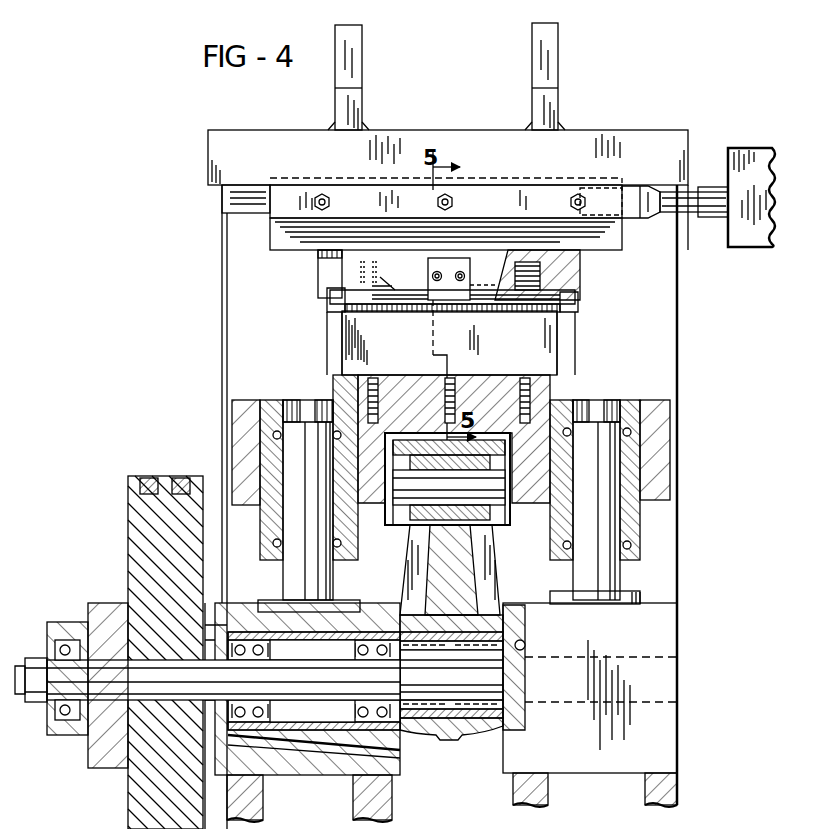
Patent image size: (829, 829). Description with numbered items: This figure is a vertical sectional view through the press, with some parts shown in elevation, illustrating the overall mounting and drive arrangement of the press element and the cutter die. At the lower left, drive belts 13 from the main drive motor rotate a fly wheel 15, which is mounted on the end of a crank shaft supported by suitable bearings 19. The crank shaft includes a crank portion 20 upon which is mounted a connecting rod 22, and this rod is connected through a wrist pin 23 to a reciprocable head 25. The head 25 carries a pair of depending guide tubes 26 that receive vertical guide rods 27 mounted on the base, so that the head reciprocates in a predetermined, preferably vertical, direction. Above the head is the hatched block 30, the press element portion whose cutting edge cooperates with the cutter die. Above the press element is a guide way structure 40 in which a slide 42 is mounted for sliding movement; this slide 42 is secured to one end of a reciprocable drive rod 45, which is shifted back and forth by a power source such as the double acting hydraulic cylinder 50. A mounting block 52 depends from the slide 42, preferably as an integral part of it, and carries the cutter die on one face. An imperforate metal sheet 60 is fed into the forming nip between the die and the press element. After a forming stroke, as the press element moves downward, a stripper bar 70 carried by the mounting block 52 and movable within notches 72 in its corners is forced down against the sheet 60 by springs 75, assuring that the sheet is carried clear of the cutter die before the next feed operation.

The drive belts 13 is at (182, 478).
The fly wheel 15 is at (130, 522).
The bearings 19 is at (350, 722).
The crank portion 20 is at (490, 660).
The connecting rod 22 is at (455, 577).
The wrist pin 23 is at (415, 487).
The reciprocable head 25 is at (352, 422).
The guide tubes 26 is at (262, 460).
The guide rods 27 is at (302, 428).
The slide block 30 is at (553, 388).
The guide way structure 40 is at (612, 245).
The slide 42 is at (350, 262).
The reciprocable drive rod 45 is at (690, 205).
The double acting hydraulic cylinder 50 is at (748, 160).
The mounting block 52 is at (425, 279).
The imperforate metal sheet 60 is at (467, 310).
The stripper bar 70 is at (362, 302).
The notches 72 is at (330, 298).
The springs 75 is at (400, 309).